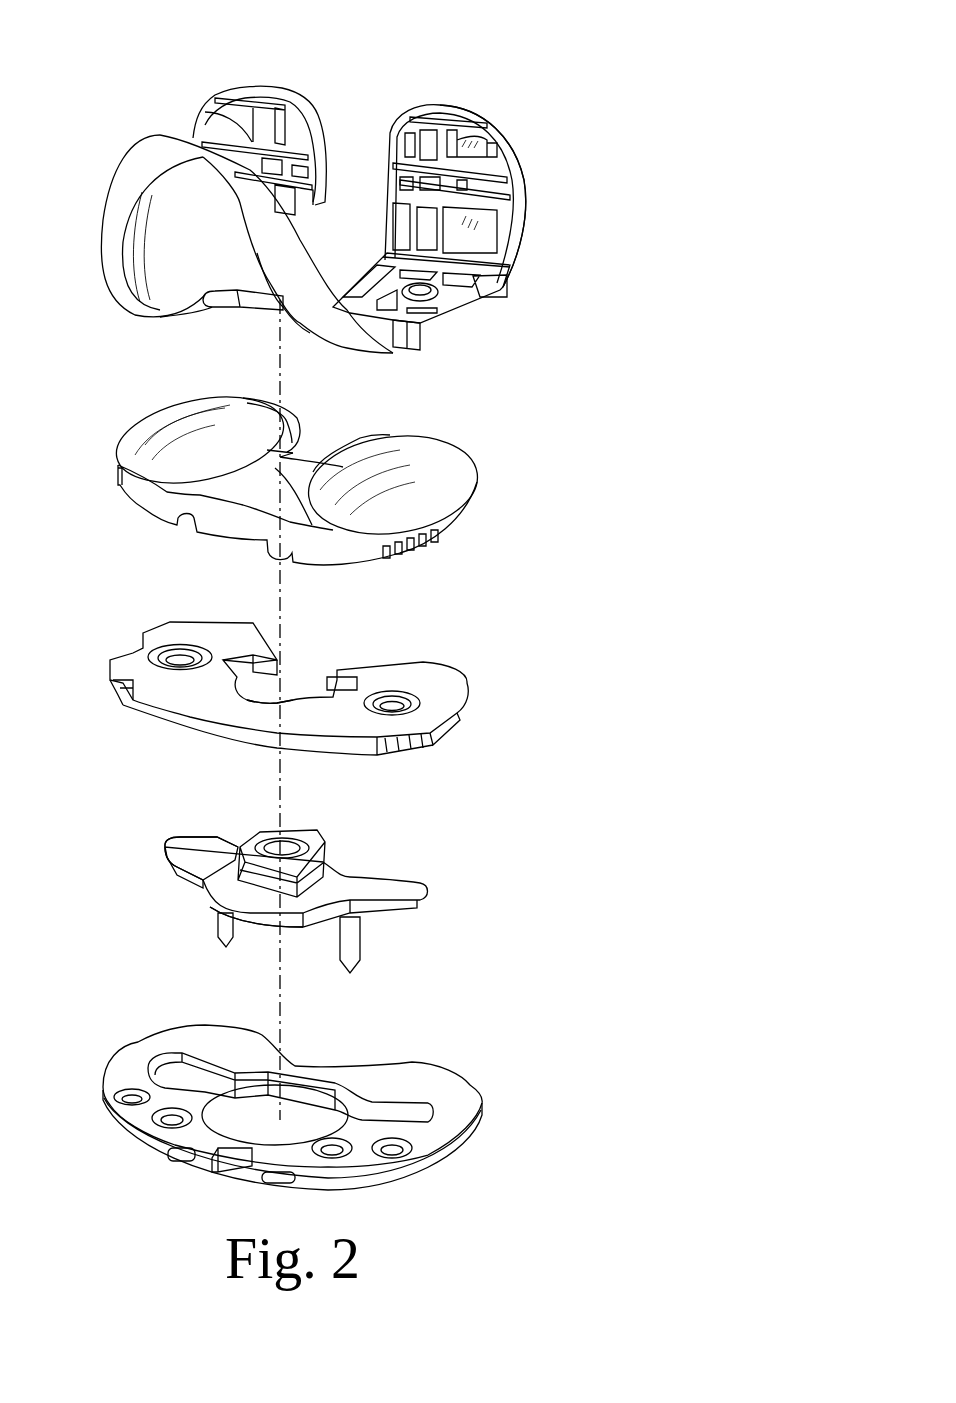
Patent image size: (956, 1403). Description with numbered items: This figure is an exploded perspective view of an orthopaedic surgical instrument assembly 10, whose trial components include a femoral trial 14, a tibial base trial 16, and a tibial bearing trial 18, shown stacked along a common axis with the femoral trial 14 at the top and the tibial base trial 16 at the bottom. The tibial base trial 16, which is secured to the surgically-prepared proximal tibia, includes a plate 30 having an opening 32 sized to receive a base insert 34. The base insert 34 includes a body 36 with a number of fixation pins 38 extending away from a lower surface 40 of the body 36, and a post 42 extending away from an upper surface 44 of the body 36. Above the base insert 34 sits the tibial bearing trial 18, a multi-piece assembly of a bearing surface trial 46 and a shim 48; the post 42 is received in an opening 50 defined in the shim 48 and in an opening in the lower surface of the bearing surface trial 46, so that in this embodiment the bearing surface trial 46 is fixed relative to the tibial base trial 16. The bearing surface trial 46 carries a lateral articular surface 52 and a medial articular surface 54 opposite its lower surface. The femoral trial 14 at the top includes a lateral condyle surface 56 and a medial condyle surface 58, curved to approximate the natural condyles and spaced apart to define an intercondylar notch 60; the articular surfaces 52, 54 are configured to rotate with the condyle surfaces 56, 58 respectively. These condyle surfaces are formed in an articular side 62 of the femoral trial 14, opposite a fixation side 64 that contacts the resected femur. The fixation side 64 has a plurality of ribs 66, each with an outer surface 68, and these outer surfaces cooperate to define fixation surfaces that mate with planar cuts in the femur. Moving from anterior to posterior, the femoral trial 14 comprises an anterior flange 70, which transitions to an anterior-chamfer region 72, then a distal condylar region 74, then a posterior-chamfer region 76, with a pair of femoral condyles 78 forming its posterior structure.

The orthopaedic surgical instrument assembly 10 is at (610, 98).
The femoral trial 14 is at (437, 213).
The tibial base trial 16 is at (348, 1107).
The tibial bearing trial 18 is at (573, 440).
The plate 30 is at (297, 1107).
The opening 32 is at (385, 1095).
The base insert 34 is at (338, 887).
The body 36 is at (296, 854).
The fixation pins 38 is at (214, 926).
The lower surface 40 is at (315, 930).
The post 42 is at (315, 840).
The upper surface 44 is at (197, 840).
The bearing surface trial 46 is at (338, 474).
The shim 48 is at (339, 688).
The opening 50 is at (290, 700).
The lateral articular surface 52 is at (143, 440).
The medial articular surface 54 is at (425, 462).
The lateral condyle surface 56 is at (222, 308).
The medial condyle surface 58 is at (422, 347).
The intercondylar notch 60 is at (359, 199).
The articular side 62 is at (267, 319).
The fixation side 64 is at (215, 66).
The ribs 66 is at (507, 166).
The outer surface 68 is at (402, 123).
The anterior flange 70 is at (148, 135).
The anterior-chamfer region 72 is at (362, 325).
The distal condylar region 74 is at (500, 280).
The posterior-chamfer region 76 is at (337, 196).
The femoral condyles 78 is at (497, 125).